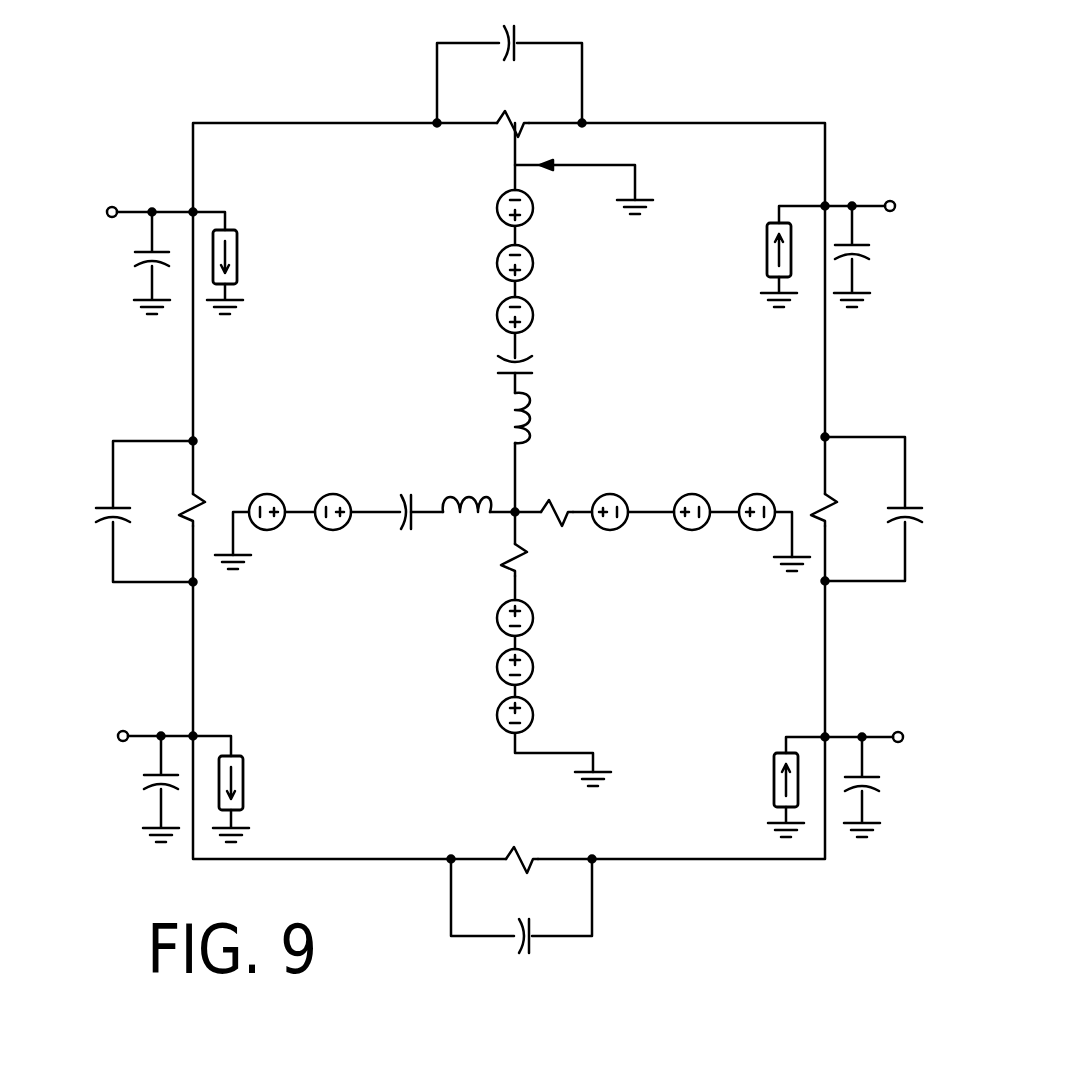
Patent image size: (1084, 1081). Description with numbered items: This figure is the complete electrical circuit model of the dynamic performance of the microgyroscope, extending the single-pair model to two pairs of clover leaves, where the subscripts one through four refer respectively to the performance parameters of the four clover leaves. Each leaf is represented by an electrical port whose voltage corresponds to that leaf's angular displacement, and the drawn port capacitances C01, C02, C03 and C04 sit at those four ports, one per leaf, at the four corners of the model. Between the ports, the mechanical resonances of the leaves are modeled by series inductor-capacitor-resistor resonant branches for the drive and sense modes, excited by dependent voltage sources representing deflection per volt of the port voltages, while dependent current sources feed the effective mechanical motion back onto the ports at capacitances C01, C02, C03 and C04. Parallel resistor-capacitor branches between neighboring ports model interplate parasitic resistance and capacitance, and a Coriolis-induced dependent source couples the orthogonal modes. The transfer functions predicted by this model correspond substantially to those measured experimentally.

The port capacitor C04 is at (142, 260).
The port capacitor C03 is at (865, 254).
The port capacitor C01 is at (145, 786).
The port capacitor C02 is at (874, 784).